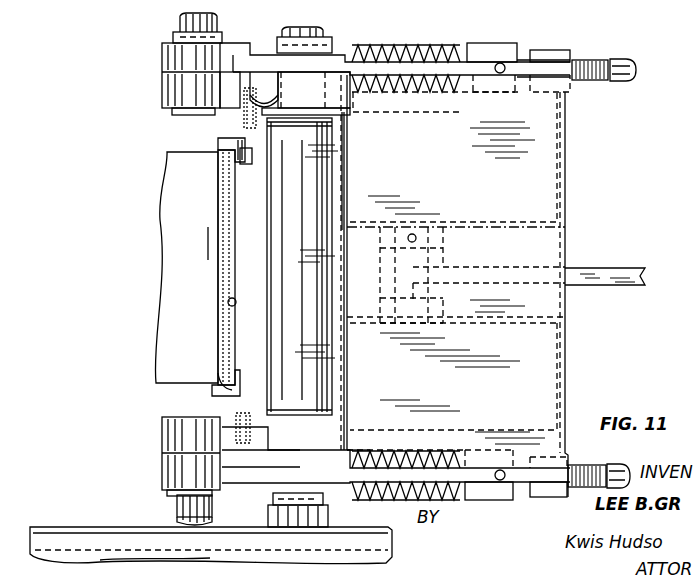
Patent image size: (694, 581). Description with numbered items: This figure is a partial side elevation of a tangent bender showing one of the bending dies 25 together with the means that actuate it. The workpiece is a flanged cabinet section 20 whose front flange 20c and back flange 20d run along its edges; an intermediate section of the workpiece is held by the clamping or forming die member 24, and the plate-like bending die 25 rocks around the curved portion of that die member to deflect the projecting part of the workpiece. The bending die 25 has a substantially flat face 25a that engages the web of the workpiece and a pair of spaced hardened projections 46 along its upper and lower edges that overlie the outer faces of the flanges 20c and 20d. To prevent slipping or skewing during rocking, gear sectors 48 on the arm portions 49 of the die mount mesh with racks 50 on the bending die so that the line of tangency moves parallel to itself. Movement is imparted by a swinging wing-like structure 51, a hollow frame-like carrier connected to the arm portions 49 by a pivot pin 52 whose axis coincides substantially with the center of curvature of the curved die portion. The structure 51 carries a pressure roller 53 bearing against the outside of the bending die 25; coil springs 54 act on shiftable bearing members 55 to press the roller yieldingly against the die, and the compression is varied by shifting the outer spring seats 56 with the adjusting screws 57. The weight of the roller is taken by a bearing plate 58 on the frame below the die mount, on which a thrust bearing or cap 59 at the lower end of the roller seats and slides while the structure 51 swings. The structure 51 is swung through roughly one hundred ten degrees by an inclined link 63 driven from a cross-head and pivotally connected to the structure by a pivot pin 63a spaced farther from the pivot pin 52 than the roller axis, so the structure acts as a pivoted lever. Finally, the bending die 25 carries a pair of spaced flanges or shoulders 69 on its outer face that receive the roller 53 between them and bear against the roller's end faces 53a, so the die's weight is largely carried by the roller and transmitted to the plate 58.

The cabinet section 20 is at (218, 262).
The front flange 20c is at (224, 153).
The back flange 20d is at (220, 372).
The clamping die member 24 is at (184, 153).
The bending die 25 is at (262, 228).
The flat face 25a is at (236, 300).
The projections 46 is at (240, 156).
The gear sectors 48 is at (162, 97).
The arm portions 49 is at (312, 40).
The racks 50 is at (258, 98).
The wing-like structure 51 is at (556, 374).
The pivot pin 52 is at (212, 12).
The pressure roller 53 is at (342, 183).
The roller end faces 53a is at (348, 118).
The coil springs 54 is at (436, 48).
The shiftable bearing members 55 is at (352, 44).
The outer spring seats 56 is at (500, 46).
The adjusting screws 57 is at (592, 60).
The bearing plates 58 is at (360, 535).
The thrust bearings or caps 59 is at (335, 534).
The links 63 is at (608, 272).
The pivot pins 63a is at (440, 228).
The flanges or shoulders 69 is at (278, 110).